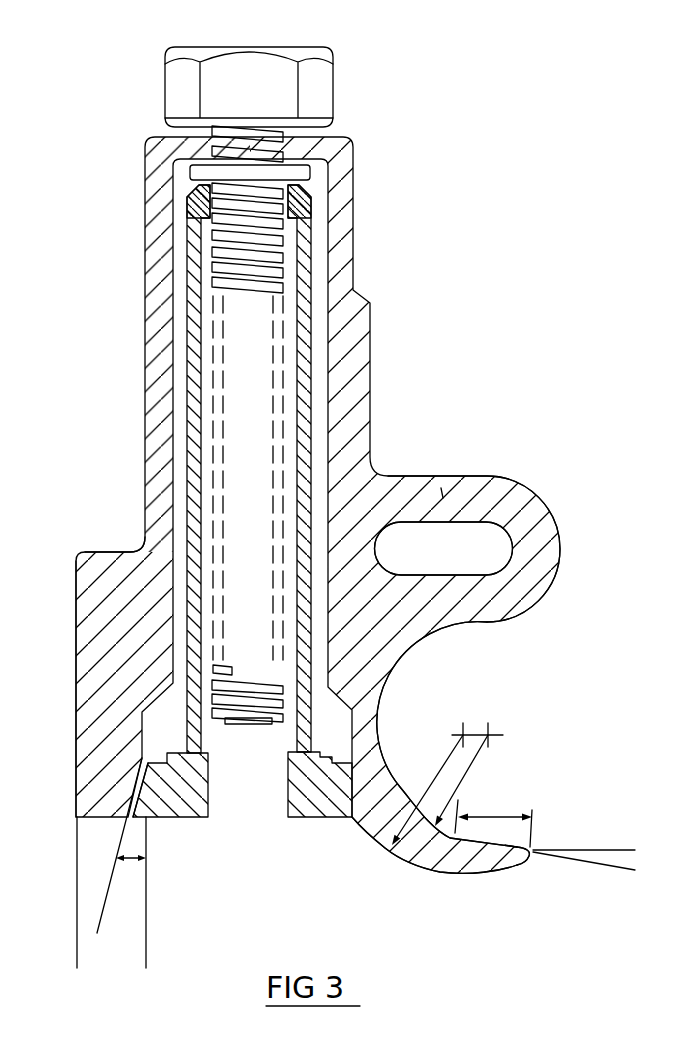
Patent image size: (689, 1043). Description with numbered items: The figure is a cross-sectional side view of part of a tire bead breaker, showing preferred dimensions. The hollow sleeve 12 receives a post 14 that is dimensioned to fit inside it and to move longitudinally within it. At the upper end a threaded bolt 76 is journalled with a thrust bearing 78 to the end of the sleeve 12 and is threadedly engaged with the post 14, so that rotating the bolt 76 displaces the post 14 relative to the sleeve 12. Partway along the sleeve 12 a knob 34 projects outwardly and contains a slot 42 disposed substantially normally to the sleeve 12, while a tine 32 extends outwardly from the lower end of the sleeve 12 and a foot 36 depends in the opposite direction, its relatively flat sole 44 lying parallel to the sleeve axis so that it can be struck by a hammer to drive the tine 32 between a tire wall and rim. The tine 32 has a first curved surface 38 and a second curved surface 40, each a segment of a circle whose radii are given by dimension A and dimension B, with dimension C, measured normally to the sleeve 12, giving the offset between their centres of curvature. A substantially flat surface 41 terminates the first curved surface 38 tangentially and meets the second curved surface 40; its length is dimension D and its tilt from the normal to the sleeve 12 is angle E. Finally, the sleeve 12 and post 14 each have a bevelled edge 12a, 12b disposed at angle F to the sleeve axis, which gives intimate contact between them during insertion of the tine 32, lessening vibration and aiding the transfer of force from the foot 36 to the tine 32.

The sleeve 12 is at (136, 292).
The bevelled edge 12a is at (133, 783).
The bevelled edge 12b is at (153, 800).
The post 14 is at (296, 851).
The tine 32 is at (505, 872).
The knob 34 is at (543, 500).
The foot 36 is at (92, 548).
The first curved surface 38 is at (412, 808).
The second curved surface 40 is at (430, 872).
The flat surface 41 is at (515, 846).
The slot 42 is at (456, 566).
The sole 44 is at (77, 666).
The threaded bolt 76 is at (293, 47).
The thrust bearing 78 is at (305, 172).
The dimension A is at (461, 780).
The dimension B is at (427, 790).
The dimension C is at (477, 720).
The dimension D is at (493, 821).
The dimension E is at (605, 851).
The angle F is at (111, 892).